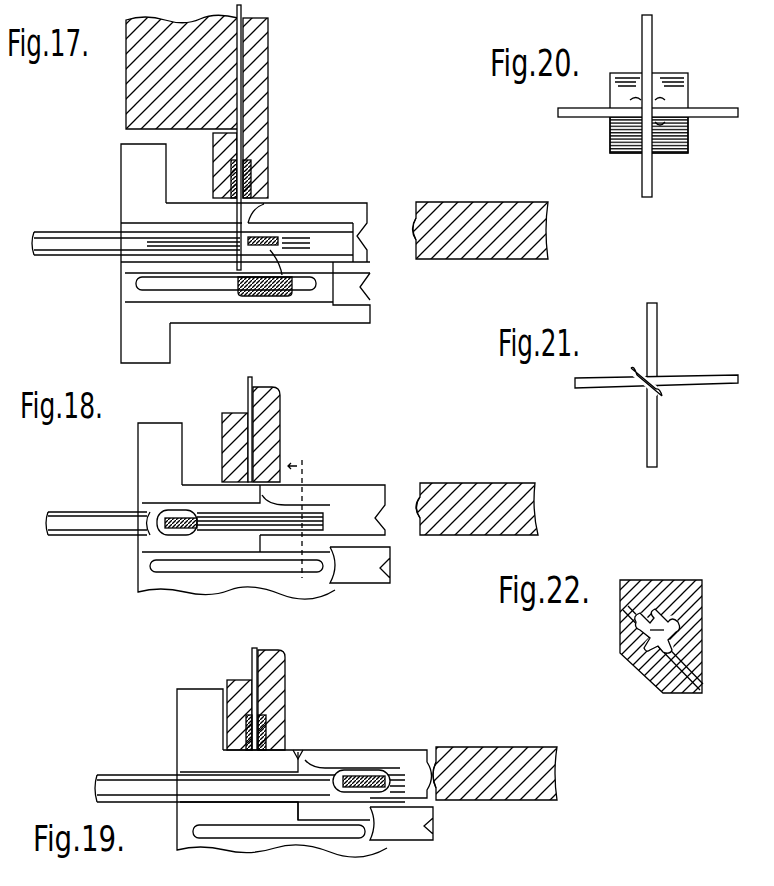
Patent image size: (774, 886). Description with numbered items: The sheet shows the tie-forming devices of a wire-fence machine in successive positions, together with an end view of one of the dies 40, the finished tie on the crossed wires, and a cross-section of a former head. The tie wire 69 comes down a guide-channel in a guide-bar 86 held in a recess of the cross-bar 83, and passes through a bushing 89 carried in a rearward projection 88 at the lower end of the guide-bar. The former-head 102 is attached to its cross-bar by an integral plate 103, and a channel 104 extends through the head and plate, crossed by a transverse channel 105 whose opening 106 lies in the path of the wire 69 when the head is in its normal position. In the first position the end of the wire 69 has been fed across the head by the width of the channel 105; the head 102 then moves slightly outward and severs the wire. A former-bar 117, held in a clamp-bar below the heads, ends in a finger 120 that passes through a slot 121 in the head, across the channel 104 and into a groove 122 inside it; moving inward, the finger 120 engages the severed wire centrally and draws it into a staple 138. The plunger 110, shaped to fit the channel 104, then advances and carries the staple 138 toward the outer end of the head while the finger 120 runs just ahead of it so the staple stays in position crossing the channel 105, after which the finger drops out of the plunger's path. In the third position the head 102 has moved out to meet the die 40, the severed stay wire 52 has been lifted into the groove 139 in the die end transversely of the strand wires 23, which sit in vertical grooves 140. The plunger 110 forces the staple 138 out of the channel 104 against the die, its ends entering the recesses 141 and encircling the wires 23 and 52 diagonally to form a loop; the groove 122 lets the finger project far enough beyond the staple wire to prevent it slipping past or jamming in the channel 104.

In FIG. 20, the line wire 23 is at (654, 41).
In FIG. 21, the line wire 23 is at (658, 344).
In FIG. 17, the die 40 is at (460, 205).
In FIG. 18, the die 40 is at (466, 484).
In FIG. 19, the die 40 is at (490, 798).
In FIG. 20, the die 40 is at (612, 89).
In FIG. 20, the stay wire 52 is at (592, 119).
In FIG. 21, the stay wire 52 is at (606, 391).
In FIG. 17, the tie wire 69 is at (241, 105).
In FIG. 18, the tie wire 69 is at (248, 397).
In FIG. 19, the tie wire 69 is at (258, 666).
In FIG. 17, the cross-bar 83 is at (132, 74).
In FIG. 17, the guide-bar 86 is at (268, 81).
In FIG. 18, the guide-bar 86 is at (280, 421).
In FIG. 19, the guide-bar 86 is at (278, 685).
In FIG. 17, the rearward projection 88 is at (213, 165).
In FIG. 18, the rearward projection 88 is at (222, 441).
In FIG. 19, the rearward projection 88 is at (240, 690).
In FIG. 17, the bushing 89 is at (258, 173).
In FIG. 19, the bushing 89 is at (268, 715).
In FIG. 17, the former-head 102 is at (340, 210).
In FIG. 18, the former-head 102 is at (348, 485).
In FIG. 19, the former-head 102 is at (386, 750).
In FIG. 22, the former-head 102 is at (702, 603).
In FIG. 17, the plate 103 is at (128, 178).
In FIG. 18, the plate 103 is at (145, 444).
In FIG. 19, the plate 103 is at (188, 720).
In FIG. 17, the channel 104 is at (160, 253).
In FIG. 18, the channel 104 is at (358, 506).
In FIG. 19, the channel 104 is at (405, 766).
In FIG. 22, the channel 104 is at (648, 634).
In FIG. 17, the channel 105 is at (262, 216).
In FIG. 18, the channel 105 is at (258, 561).
In FIG. 19, the channel 105 is at (305, 822).
In FIG. 19, the opening 106 is at (300, 750).
In FIG. 17, the plunger 110 is at (63, 232).
In FIG. 18, the plunger 110 is at (90, 512).
In FIG. 19, the plunger 110 is at (250, 788).
In FIG. 17, the former-bar 117 is at (262, 298).
In FIG. 17, the finger 120 is at (280, 262).
In FIG. 18, the finger 120 is at (190, 541).
In FIG. 17, the slot 121 is at (183, 236).
In FIG. 18, the slot 121 is at (270, 566).
In FIG. 19, the slot 121 is at (278, 839).
In FIG. 22, the slot 121 is at (638, 654).
In FIG. 18, the groove 122 is at (310, 520).
In FIG. 22, the groove 122 is at (680, 627).
In FIG. 18, the staple 138 is at (160, 532).
In FIG. 19, the staple 138 is at (350, 770).
In FIG. 21, the staple 138 is at (665, 395).
In FIG. 20, the groove 139 is at (678, 101).
In FIG. 20, the vertical groove 140 is at (636, 96).
In FIG. 17, the recess 141 is at (412, 241).
In FIG. 18, the recess 141 is at (425, 521).
In FIG. 19, the recess 141 is at (465, 752).
In FIG. 20, the recess 141 is at (660, 122).